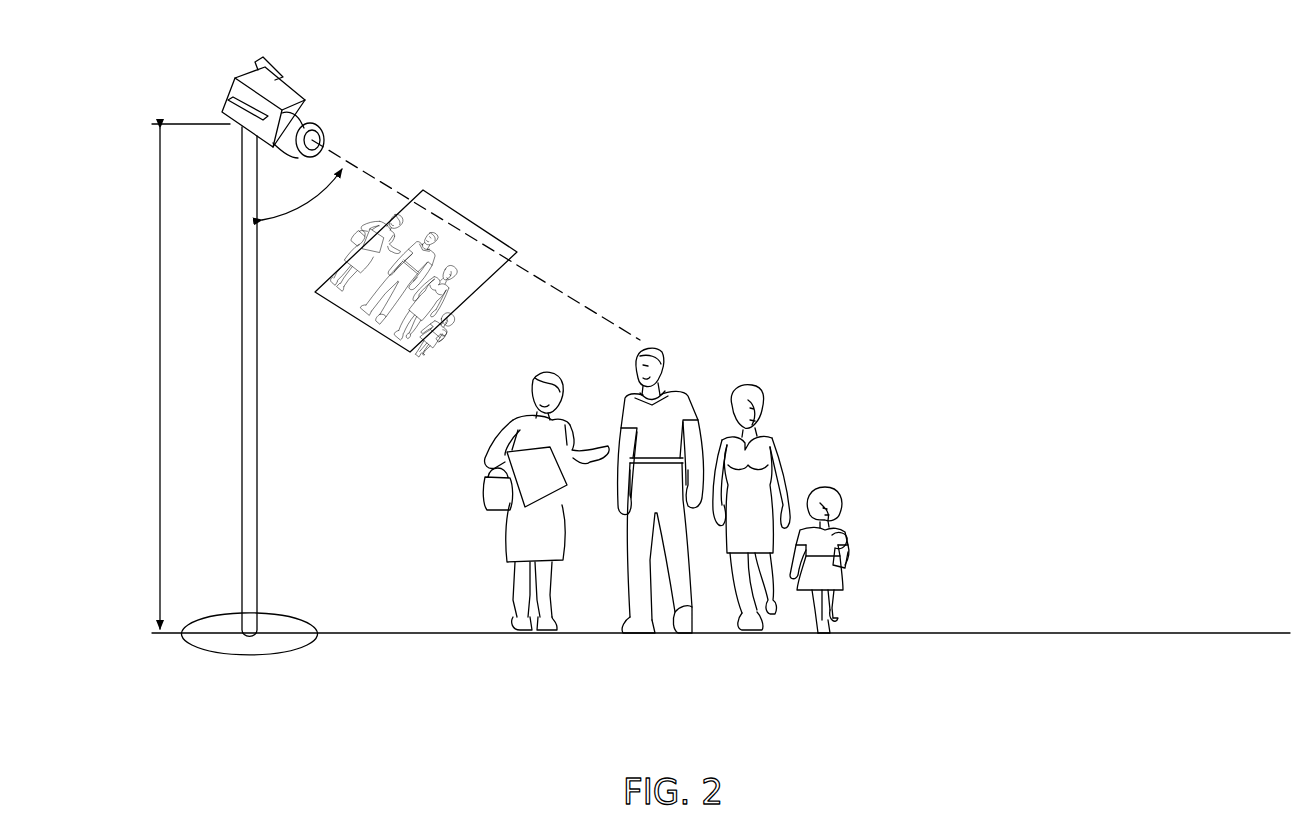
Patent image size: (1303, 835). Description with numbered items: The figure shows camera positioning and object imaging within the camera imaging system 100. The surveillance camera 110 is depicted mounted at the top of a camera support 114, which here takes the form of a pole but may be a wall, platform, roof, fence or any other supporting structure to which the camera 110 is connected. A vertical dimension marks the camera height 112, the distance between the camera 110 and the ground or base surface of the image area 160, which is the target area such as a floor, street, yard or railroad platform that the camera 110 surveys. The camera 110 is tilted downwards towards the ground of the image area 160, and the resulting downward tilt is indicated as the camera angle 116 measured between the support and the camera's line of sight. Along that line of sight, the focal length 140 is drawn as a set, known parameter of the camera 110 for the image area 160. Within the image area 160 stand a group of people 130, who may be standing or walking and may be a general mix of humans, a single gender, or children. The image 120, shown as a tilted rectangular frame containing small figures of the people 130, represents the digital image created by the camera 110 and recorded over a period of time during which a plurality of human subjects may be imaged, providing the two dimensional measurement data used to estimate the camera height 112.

The camera imaging system 100 is at (698, 233).
The surveillance camera 110 is at (247, 75).
The camera height 112 is at (160, 371).
The camera support 114 is at (242, 485).
The camera angle 116 is at (262, 221).
The image 120 is at (468, 220).
The people 130 is at (762, 375).
The focal length 140 is at (598, 313).
The image area 160 is at (777, 634).